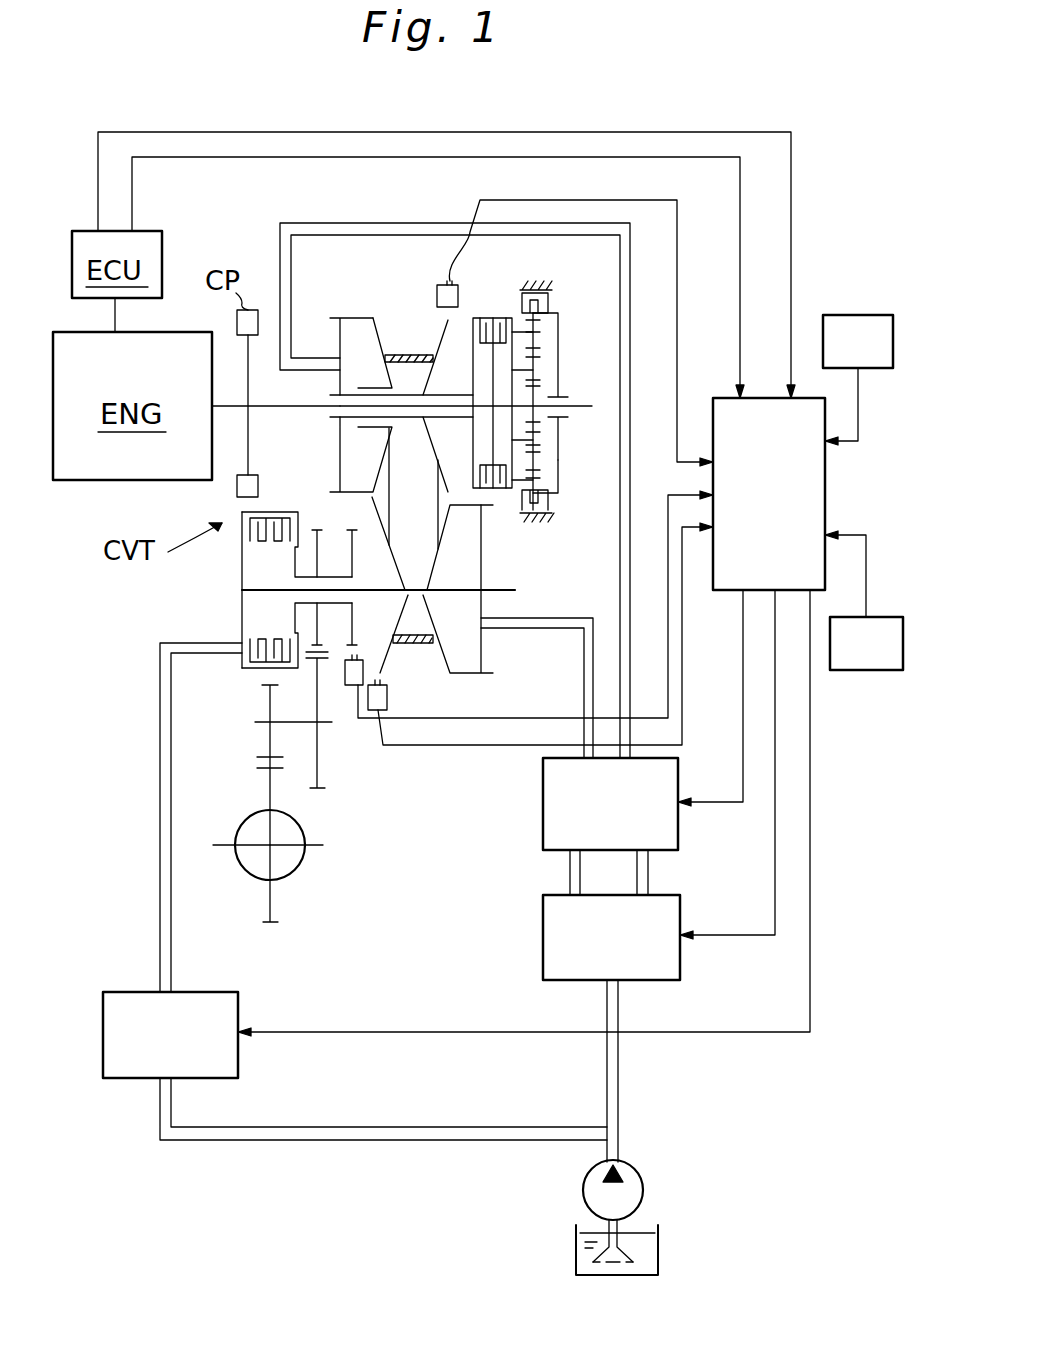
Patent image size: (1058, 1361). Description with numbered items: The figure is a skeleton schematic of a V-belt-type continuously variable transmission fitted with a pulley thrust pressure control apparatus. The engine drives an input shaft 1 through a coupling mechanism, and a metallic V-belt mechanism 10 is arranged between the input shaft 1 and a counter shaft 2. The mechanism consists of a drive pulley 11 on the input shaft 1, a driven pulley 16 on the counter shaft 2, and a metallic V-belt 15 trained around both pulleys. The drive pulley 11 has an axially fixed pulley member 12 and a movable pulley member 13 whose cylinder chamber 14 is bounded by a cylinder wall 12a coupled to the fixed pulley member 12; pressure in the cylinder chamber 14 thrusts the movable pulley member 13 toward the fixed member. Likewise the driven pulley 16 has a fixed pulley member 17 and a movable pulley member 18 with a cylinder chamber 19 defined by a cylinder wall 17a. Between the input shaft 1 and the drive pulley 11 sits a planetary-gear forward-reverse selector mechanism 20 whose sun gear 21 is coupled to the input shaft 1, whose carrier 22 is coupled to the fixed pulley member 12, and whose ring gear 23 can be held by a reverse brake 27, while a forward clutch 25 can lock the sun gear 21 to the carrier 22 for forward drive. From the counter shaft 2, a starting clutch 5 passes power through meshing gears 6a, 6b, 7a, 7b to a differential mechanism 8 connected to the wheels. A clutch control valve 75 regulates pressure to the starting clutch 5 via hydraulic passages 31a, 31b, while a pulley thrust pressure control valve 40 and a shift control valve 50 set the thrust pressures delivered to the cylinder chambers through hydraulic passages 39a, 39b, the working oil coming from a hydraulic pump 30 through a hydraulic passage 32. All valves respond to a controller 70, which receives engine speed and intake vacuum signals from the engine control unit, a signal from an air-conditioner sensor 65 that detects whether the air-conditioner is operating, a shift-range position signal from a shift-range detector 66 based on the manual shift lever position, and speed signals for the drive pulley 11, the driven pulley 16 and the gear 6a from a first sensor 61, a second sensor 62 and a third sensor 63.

The input shaft 1 is at (282, 411).
The counter shaft 2 is at (360, 591).
The starting clutch 5 is at (283, 512).
The gear 6a is at (317, 528).
The gear 6b is at (320, 790).
The gear 7a is at (262, 683).
The gear 7b is at (278, 925).
The differential mechanism 8 is at (297, 866).
The metallic V-belt mechanism 10 is at (490, 527).
The drive pulley 11 is at (372, 300).
The axially fixed pulley member 12 is at (442, 338).
The cylinder wall 12a is at (337, 378).
The movable pulley member 13 is at (347, 317).
The cylinder chamber 14 is at (375, 376).
The metallic V-belt 15 is at (426, 503).
The driven pulley 16 is at (502, 669).
The fixed pulley member 17 is at (398, 559).
The cylinder wall 17a is at (484, 650).
The movable pulley member 18 is at (440, 673).
The cylinder chamber 19 is at (468, 585).
The planetary-gear forward-reverse selector mechanism 20 is at (572, 292).
The sun gear 21 is at (568, 397).
The carrier 22 is at (560, 444).
The ring gear 23 is at (560, 481).
The forward clutch 25 is at (492, 318).
The reverse brake 27 is at (550, 306).
The hydraulic pump 30 is at (643, 1190).
The hydraulic passage 31a is at (350, 1127).
The hydraulic passage 31b is at (158, 896).
The hydraulic passage 32 is at (620, 1070).
The hydraulic passage 39a is at (384, 223).
The hydraulic passage 39b is at (583, 606).
The pulley thrust pressure control valve 40 is at (630, 959).
The shift control valve 50 is at (630, 823).
The first sensor 61 is at (440, 292).
The second sensor 62 is at (395, 700).
The third sensor 63 is at (346, 690).
The air-conditioner sensor 65 is at (855, 315).
The shift-range detector 66 is at (866, 670).
The controller 70 is at (790, 519).
The clutch control valve 75 is at (190, 1055).